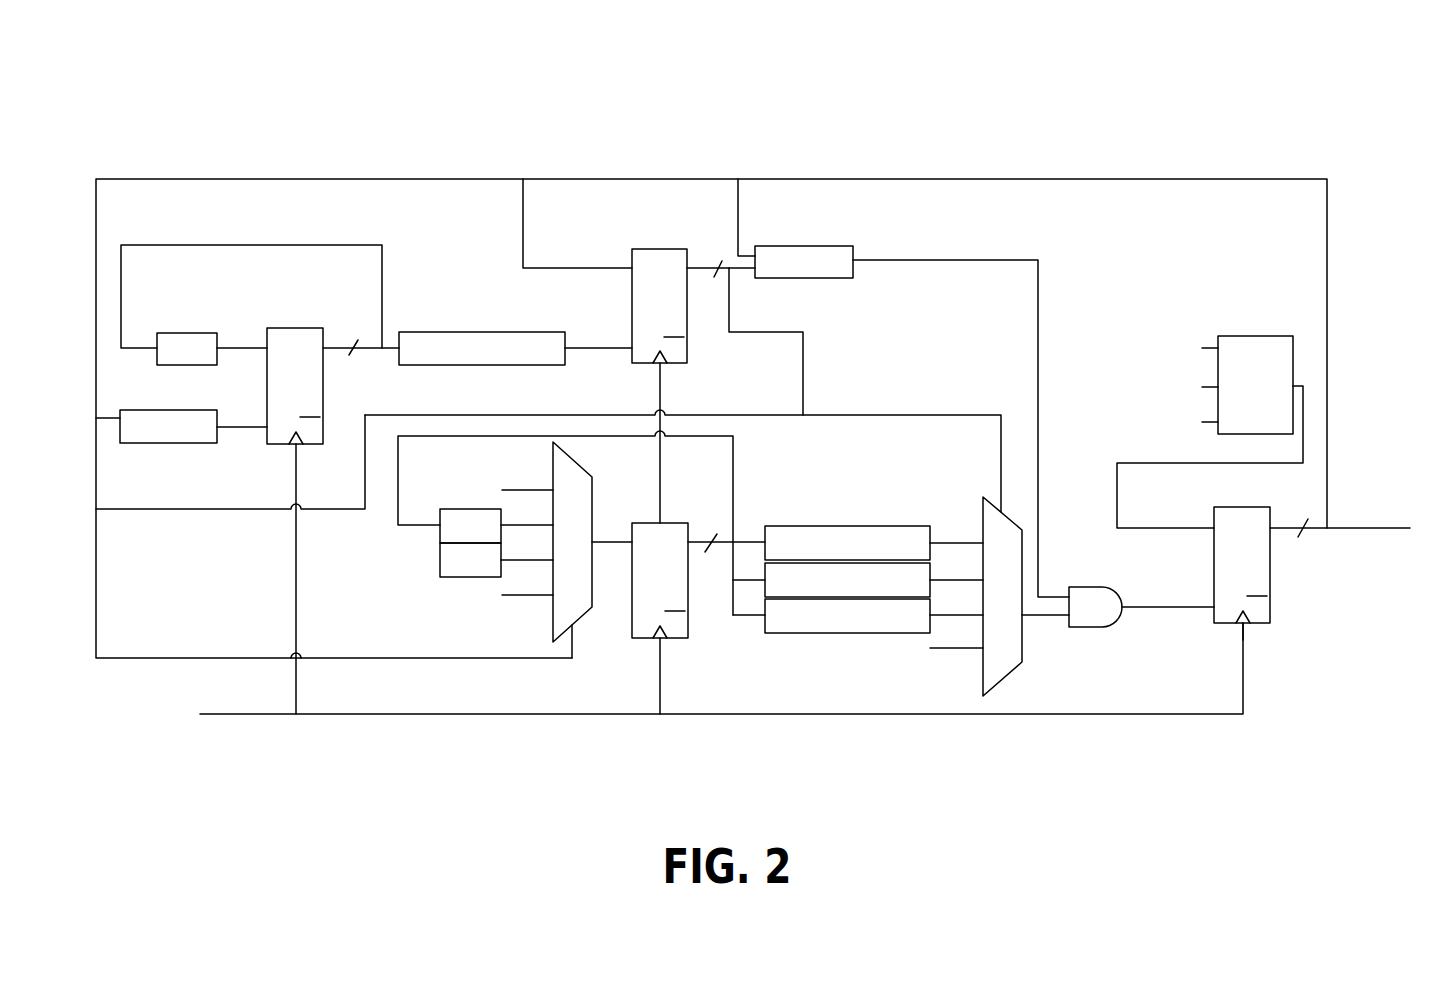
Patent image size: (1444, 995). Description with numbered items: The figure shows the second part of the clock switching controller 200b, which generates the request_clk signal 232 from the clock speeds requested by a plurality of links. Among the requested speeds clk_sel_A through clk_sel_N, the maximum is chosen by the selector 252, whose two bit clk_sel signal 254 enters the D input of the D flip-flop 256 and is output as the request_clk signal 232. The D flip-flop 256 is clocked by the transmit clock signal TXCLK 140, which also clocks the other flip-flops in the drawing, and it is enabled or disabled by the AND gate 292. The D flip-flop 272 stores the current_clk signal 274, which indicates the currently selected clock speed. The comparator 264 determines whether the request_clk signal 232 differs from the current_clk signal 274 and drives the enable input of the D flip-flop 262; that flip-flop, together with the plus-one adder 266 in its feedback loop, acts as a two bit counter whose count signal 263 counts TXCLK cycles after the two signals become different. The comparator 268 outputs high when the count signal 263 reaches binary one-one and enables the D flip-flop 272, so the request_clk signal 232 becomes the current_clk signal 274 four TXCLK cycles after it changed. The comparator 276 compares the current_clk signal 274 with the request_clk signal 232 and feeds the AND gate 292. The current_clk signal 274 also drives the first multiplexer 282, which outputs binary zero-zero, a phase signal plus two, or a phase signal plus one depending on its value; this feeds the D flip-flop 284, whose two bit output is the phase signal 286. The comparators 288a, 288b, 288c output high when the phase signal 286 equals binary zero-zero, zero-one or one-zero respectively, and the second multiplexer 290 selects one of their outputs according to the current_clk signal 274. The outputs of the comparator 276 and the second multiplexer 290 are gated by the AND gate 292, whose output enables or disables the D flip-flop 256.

The second part of the clock switching controller 200b is at (1385, 79).
The transmit clock signal (TXCLK) 140 is at (235, 716).
The request_clk signal 232 is at (1392, 528).
The selector 252 is at (1255, 336).
The clk_sel[1:0] signal 254 is at (1183, 530).
The D flip-flop 256 is at (1256, 624).
The D flip-flop 262 is at (267, 386).
The count signal 263 is at (350, 355).
The comparator 264 is at (163, 444).
The +1 adder 266 is at (161, 333).
The comparator 268 is at (483, 332).
The D flip-flop 272 is at (672, 364).
The current_clk signal 274 is at (803, 369).
The comparator 276 is at (808, 246).
The first multiplexer 282 is at (583, 468).
The D flip-flop 284 is at (648, 638).
The phase signal 286 is at (714, 548).
The comparator 288a is at (798, 526).
The comparator 288b is at (762, 578).
The comparator 288c is at (836, 634).
The second multiplexer 290 is at (1010, 672).
The AND gate 292 is at (1083, 628).